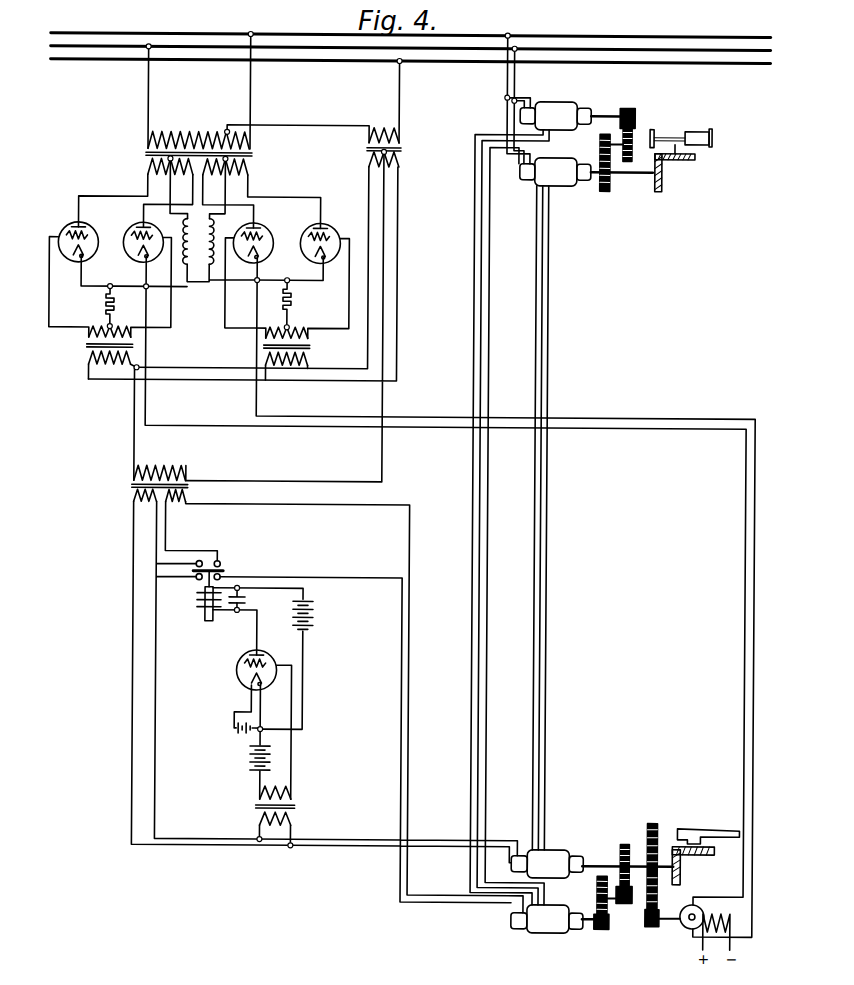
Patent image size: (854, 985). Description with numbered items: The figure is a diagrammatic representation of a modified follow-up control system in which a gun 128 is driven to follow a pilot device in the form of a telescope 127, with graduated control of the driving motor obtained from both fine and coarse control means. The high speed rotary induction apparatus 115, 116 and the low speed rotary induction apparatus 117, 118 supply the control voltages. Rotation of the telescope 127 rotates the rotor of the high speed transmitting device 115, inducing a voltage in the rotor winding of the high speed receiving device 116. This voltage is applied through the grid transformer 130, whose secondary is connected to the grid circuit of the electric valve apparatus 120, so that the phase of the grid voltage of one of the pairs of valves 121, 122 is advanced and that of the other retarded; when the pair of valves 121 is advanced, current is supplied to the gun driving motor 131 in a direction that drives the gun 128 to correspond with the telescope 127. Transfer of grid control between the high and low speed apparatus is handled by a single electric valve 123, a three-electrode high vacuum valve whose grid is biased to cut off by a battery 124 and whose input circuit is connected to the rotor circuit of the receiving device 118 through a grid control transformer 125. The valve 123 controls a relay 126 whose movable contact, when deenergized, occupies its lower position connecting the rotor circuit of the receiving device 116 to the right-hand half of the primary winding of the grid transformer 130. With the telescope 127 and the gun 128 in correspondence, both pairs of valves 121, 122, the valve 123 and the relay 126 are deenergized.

The high speed transmitting device 115 is at (555, 116).
The high speed rotary induction receiving device 116 is at (547, 919).
The low speed rotary induction apparatus 117 is at (555, 172).
The high speed rotary induction receiving device 118 is at (547, 864).
The electric valve apparatus 120 is at (308, 176).
The pair of valves 121 is at (129, 229).
The pair of valves 122 is at (306, 229).
The electric valve 123 is at (237, 667).
The battery 124 is at (251, 752).
The grid control transformer 125 is at (289, 805).
The relay 126 is at (204, 594).
The telescope 127 is at (696, 135).
The gun 128 is at (688, 826).
The grid transformer 130 is at (186, 487).
The gun driving motor 131 is at (684, 927).